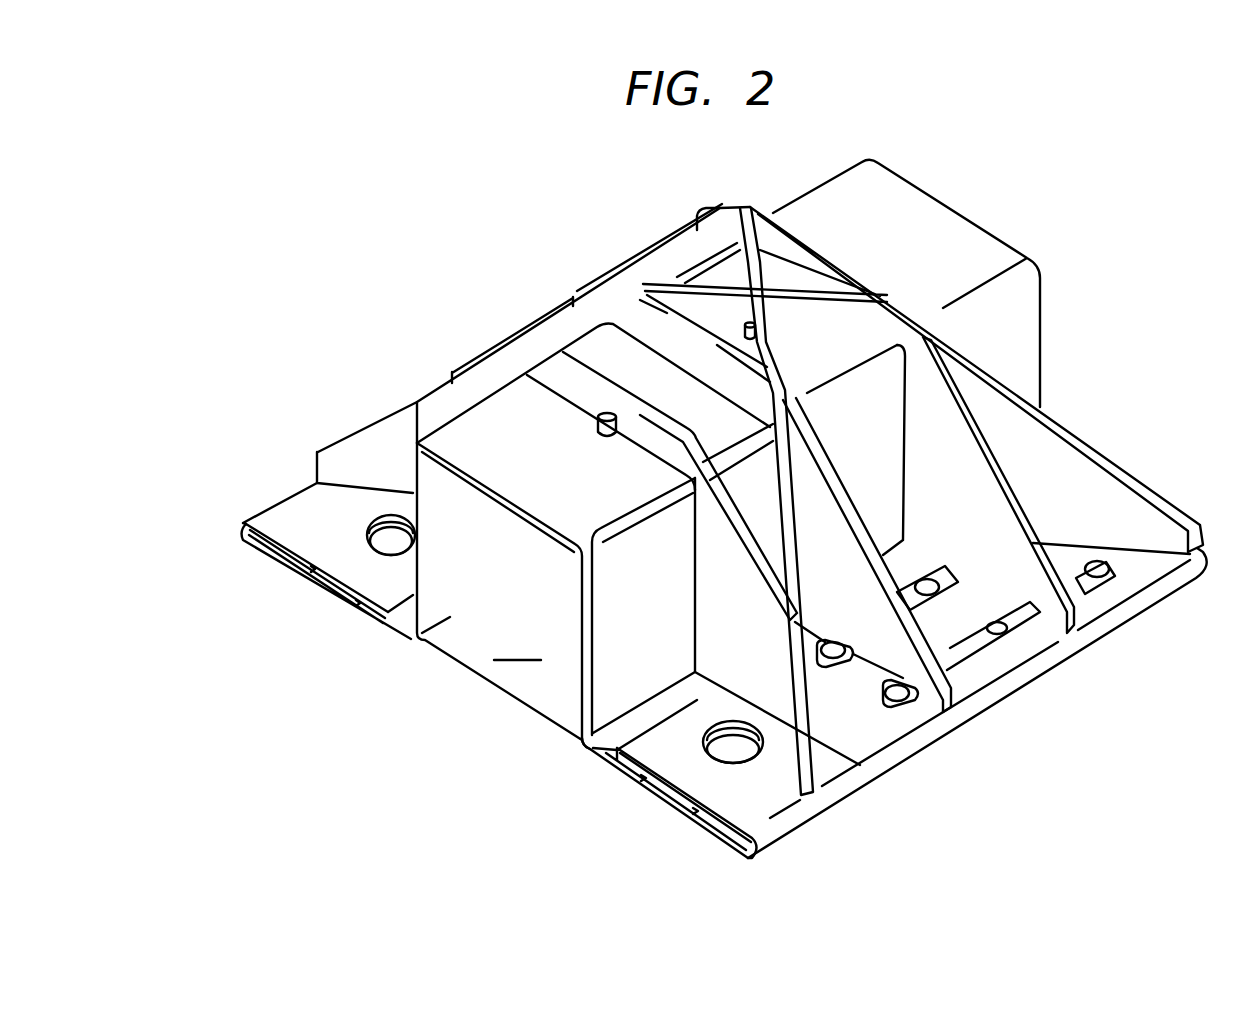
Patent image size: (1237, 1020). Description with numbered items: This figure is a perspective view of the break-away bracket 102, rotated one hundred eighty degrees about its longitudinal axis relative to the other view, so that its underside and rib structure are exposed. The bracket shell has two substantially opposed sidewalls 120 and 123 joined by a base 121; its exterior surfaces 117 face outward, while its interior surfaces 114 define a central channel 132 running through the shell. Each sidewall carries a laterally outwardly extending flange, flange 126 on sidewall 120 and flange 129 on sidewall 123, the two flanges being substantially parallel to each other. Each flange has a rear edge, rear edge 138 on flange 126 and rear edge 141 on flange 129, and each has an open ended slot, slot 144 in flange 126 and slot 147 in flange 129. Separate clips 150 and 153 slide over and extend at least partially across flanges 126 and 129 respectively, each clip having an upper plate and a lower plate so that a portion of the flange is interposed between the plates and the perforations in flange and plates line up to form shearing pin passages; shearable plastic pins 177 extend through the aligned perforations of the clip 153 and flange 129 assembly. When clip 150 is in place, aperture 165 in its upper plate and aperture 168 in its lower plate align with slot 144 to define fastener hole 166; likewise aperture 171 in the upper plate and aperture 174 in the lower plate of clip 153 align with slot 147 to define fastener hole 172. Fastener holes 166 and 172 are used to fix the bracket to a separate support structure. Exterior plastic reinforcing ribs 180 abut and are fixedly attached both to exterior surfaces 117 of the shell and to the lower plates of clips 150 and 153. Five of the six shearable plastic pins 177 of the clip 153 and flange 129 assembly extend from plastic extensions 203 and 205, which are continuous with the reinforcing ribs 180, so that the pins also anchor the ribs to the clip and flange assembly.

The break-away bracket 102 is at (411, 775).
The interior surfaces 114 is at (537, 540).
The exterior surfaces 117 is at (1022, 312).
The sidewall 120 is at (420, 508).
The base 121 is at (924, 204).
The sidewall 123 is at (580, 684).
The laterally outwardly extending flange 126 is at (397, 613).
The laterally outwardly extending flange 129 is at (607, 737).
The central channel 132 is at (517, 644).
The rear edge 138 is at (408, 631).
The rear edge 141 is at (605, 758).
The open ended slot 144 is at (330, 583).
The open ended slot 147 is at (667, 796).
The clip 150 is at (290, 485).
The clip 153 is at (787, 839).
The aperture 165 is at (398, 518).
The fastener hole 166 is at (397, 549).
The aperture 168 is at (377, 551).
The aperture 171 is at (733, 735).
The fastener hole 172 is at (730, 756).
The aperture 174 is at (733, 760).
The shearable pins 177 is at (831, 645).
The exterior plastic reinforcing ribs 180 is at (683, 246).
The plastic extension 203 is at (965, 650).
The plastic extension 205 is at (835, 663).